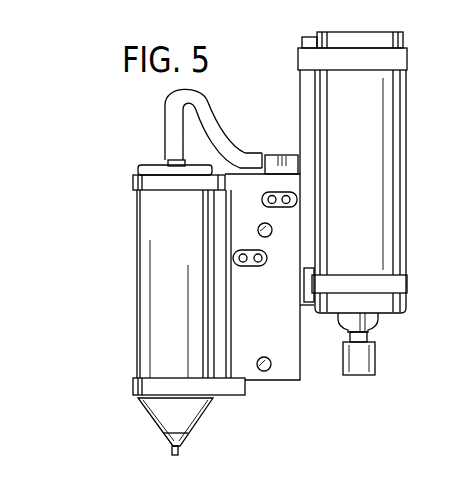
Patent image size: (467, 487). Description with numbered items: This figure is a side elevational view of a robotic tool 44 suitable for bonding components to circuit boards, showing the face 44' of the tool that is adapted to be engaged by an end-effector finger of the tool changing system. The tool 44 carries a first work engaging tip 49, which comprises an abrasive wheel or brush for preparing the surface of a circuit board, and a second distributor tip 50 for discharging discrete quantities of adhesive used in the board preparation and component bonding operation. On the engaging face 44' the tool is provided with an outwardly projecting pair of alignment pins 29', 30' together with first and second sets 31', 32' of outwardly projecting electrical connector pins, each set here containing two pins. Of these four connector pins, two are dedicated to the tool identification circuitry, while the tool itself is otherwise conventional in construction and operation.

The robotic tool 44 is at (159, 305).
The face of robotic tool 44' is at (301, 241).
The second distributor tip 50 is at (178, 449).
The first set of electrical connector pins 31' is at (315, 187).
The alignment pin 29' is at (313, 221).
The second set of electrical connector pins 32' is at (301, 249).
The alignment pin 30' is at (289, 388).
The first work engaging tip 49 is at (367, 353).